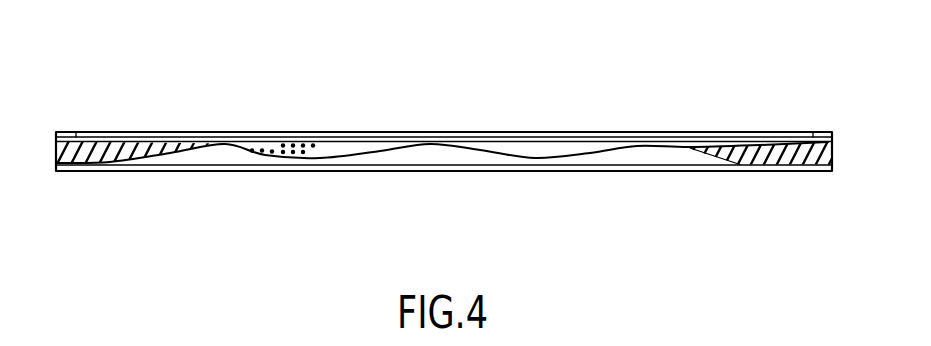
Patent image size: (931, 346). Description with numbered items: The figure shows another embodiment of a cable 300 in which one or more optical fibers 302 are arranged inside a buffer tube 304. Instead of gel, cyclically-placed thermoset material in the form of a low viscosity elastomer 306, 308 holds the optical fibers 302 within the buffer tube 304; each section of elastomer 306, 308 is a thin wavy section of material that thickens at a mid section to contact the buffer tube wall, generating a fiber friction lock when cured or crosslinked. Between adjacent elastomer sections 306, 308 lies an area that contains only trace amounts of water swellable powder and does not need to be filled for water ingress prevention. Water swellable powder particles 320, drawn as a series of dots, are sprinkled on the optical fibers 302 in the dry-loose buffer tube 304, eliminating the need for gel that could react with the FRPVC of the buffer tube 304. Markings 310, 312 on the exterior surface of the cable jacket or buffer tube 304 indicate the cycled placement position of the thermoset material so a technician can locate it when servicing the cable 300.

The cable 300 is at (172, 106).
The optical fibers 302 is at (607, 153).
The buffer tube 304 is at (465, 135).
The cyclically-placed low viscosity elastomer 306 is at (106, 158).
The cyclically-placed low viscosity elastomer 308 is at (762, 160).
The marking 310 is at (68, 133).
The marking 312 is at (817, 138).
The water swellable powder particles 320 is at (338, 141).